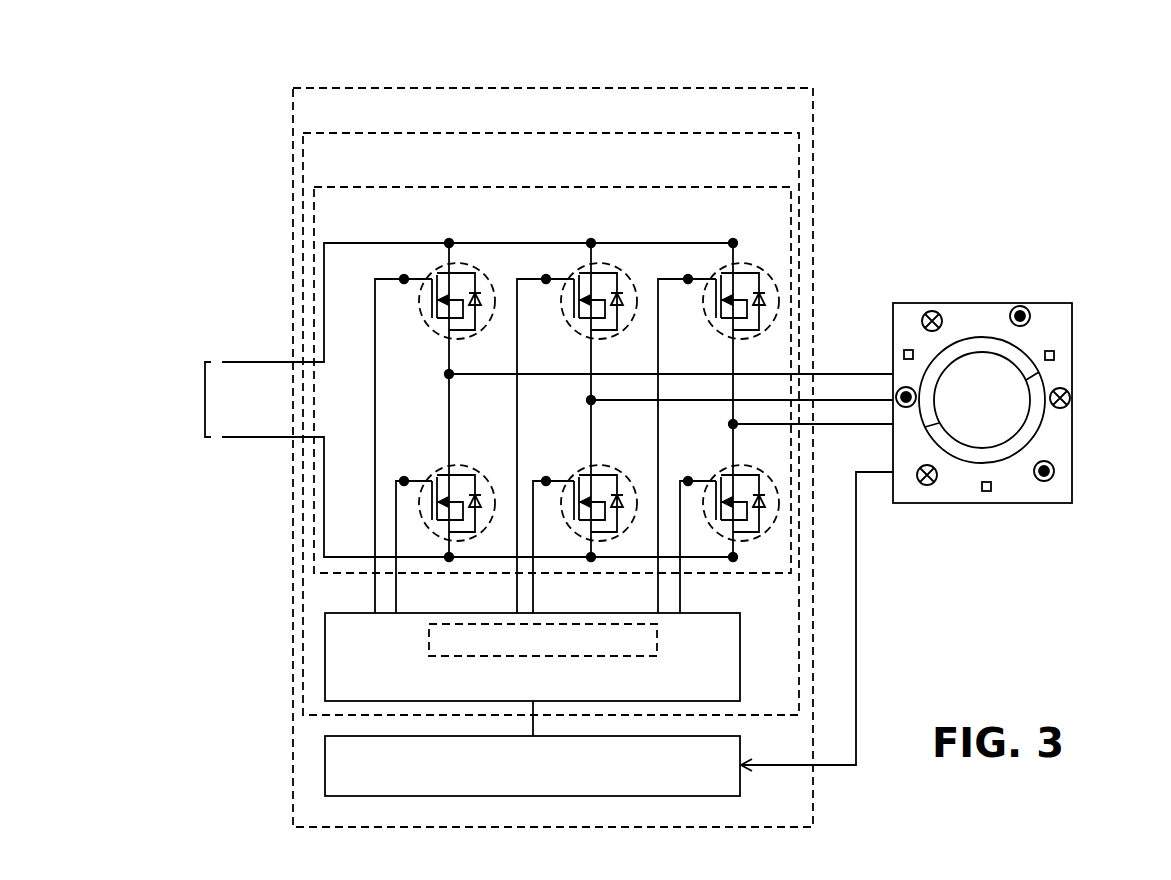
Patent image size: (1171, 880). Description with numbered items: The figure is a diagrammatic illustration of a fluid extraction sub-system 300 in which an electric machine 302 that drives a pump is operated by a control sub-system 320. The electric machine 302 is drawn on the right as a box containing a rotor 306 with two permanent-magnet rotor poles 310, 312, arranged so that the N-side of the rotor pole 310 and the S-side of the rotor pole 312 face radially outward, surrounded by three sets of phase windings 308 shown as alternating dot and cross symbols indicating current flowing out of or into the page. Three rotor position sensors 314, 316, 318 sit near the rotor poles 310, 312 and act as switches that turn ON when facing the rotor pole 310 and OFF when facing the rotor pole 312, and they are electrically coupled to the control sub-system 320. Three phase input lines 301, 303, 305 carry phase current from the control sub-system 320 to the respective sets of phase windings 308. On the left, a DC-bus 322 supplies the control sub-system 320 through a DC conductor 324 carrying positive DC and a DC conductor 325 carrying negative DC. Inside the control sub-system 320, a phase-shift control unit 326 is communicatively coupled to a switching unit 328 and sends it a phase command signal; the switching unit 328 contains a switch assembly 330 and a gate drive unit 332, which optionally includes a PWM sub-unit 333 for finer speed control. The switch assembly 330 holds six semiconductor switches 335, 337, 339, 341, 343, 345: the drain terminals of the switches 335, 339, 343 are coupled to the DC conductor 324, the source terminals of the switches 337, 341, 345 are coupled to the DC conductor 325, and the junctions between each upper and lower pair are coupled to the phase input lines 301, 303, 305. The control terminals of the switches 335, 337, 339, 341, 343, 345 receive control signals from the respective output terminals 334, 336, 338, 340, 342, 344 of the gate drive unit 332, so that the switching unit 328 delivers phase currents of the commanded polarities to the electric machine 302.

The fluid extraction sub-system 300 is at (246, 112).
The phase input line 301 is at (841, 375).
The electric machine 302 is at (998, 303).
The phase input line 303 is at (827, 400).
The phase input line 305 is at (835, 424).
The rotor 306 is at (970, 337).
The phase windings 308 is at (1044, 482).
The rotor pole 310 is at (953, 360).
The rotor pole 312 is at (960, 446).
The rotor position sensor 314 is at (985, 492).
The rotor position sensor 316 is at (909, 349).
The rotor position sensor 318 is at (1058, 356).
The control sub-system 320 is at (503, 88).
The DC-bus 322 is at (203, 399).
The DC conductor 324 is at (242, 362).
The DC conductor 325 is at (232, 437).
The phase-shift control unit 326 is at (723, 796).
The switching unit 328 is at (577, 133).
The switch assembly 330 is at (642, 187).
The gate drive unit 332 is at (742, 643).
The PWM sub-unit 333 is at (657, 626).
The output terminal 334 is at (375, 596).
The semiconductor switch 335 is at (420, 295).
The output terminal 336 is at (396, 590).
The semiconductor switch 337 is at (441, 464).
The output terminal 338 is at (517, 596).
The semiconductor switch 339 is at (562, 295).
The output terminal 340 is at (533, 590).
The semiconductor switch 341 is at (583, 462).
The output terminal 342 is at (658, 596).
The semiconductor switch 343 is at (703, 297).
The output terminal 344 is at (680, 590).
The semiconductor switch 345 is at (727, 466).